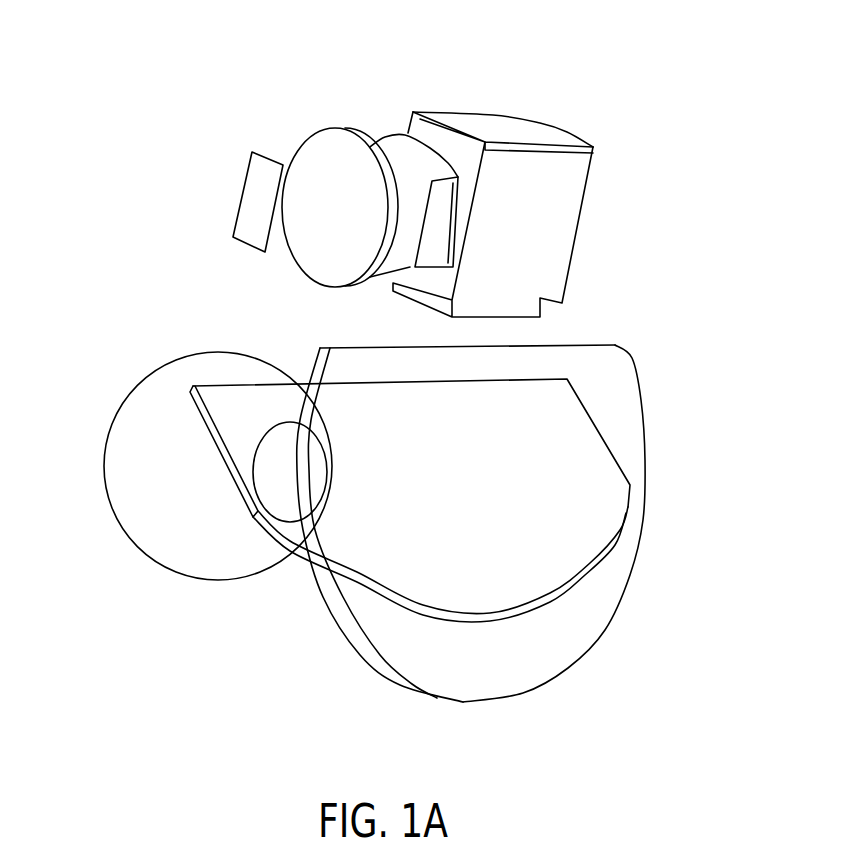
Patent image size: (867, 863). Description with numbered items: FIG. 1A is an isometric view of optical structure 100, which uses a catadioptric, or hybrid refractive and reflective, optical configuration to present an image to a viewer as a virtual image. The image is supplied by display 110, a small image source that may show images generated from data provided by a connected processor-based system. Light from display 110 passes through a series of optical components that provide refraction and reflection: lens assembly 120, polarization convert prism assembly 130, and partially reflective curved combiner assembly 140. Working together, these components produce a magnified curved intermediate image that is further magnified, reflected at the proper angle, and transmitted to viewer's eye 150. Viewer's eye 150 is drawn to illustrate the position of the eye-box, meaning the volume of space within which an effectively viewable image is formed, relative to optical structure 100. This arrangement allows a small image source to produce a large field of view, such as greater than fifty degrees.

The optical structure 100 is at (655, 88).
The display 110 is at (263, 153).
The lens assembly 120 is at (326, 128).
The polarization convert prism assembly 130 is at (475, 112).
The partially reflective curved combiner assembly 140 is at (656, 408).
The viewer's eye 150 is at (113, 515).